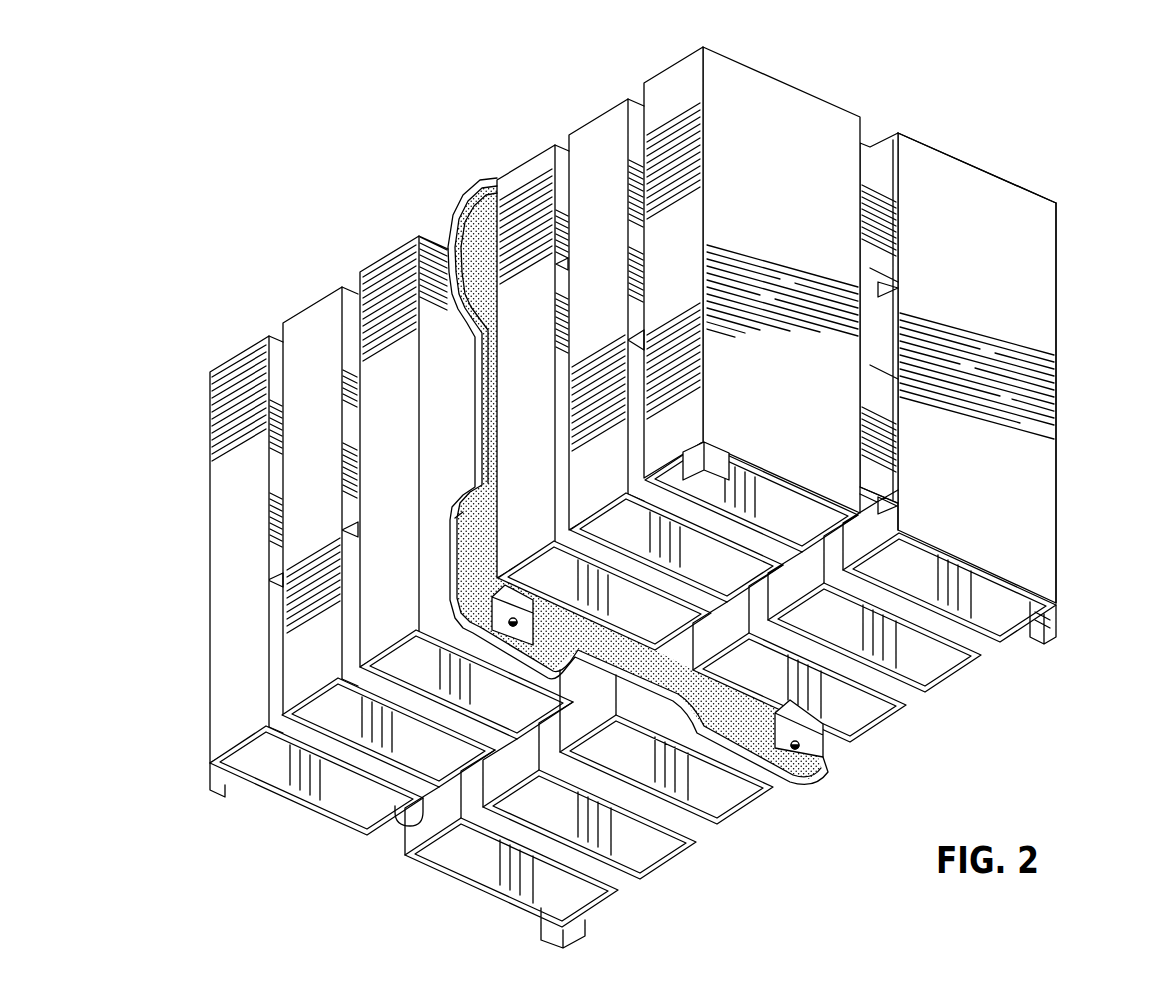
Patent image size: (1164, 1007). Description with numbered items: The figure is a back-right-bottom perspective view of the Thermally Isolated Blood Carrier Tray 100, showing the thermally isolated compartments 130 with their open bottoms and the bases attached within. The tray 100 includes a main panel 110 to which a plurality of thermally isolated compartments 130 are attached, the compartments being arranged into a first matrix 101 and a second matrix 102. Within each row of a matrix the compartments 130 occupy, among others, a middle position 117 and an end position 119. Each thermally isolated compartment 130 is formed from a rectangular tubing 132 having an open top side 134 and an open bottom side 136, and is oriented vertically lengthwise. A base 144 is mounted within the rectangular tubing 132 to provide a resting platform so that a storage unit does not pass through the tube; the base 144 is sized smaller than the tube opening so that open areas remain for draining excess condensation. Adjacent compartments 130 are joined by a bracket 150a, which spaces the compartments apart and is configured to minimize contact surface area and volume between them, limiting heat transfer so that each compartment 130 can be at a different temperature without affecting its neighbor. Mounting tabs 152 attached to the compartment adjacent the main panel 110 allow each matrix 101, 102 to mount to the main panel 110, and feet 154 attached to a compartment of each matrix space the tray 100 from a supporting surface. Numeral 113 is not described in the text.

The Thermally Isolated Blood Carrier Tray 100 is at (228, 113).
The first matrix 101 is at (323, 262).
The second matrix 102 is at (797, 76).
The main panel 110 is at (483, 212).
The battery cell 113 is at (528, 185).
The middle position 117 is at (598, 137).
The end position 119 is at (678, 103).
The thermally isolated compartment 130 is at (985, 165).
The rectangular tubing 132 is at (1050, 295).
The open top side 134 is at (1055, 200).
The open bottom side 136 is at (1020, 572).
The base 144 is at (960, 600).
The bracket 150a is at (876, 147).
The mounting tabs 152 is at (810, 757).
The feet 154 is at (1057, 610).